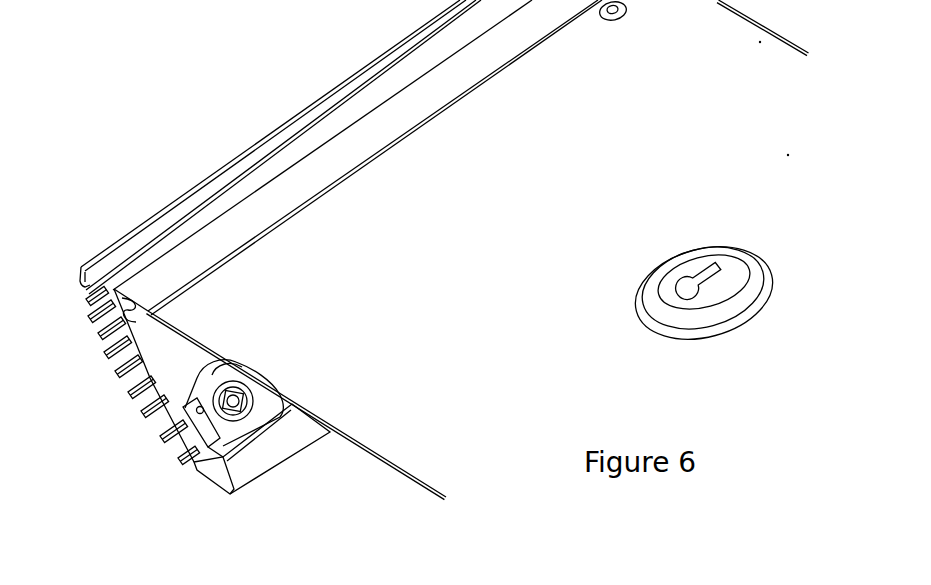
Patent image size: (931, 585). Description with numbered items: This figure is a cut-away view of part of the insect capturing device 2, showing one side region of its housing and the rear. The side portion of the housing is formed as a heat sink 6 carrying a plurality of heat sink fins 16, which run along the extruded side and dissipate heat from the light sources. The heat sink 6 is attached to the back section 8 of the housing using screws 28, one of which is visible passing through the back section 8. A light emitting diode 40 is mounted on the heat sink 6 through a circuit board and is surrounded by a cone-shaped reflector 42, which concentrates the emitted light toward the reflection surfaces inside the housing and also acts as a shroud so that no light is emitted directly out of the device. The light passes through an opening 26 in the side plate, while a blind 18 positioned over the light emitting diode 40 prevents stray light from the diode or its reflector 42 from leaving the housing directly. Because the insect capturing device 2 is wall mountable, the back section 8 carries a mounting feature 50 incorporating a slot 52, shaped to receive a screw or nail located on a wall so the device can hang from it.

The insect capturing device 2 is at (242, 113).
The heat sink 6 is at (127, 403).
The back section 8 is at (497, 247).
The heat sink fins 16 is at (175, 442).
The blind 18 is at (286, 438).
The opening 26 is at (188, 365).
The screws 28 is at (630, 25).
The light emitting diode 40 is at (235, 394).
The reflector 42 is at (223, 366).
The mounting feature 50 is at (681, 315).
The slot 52 is at (686, 282).